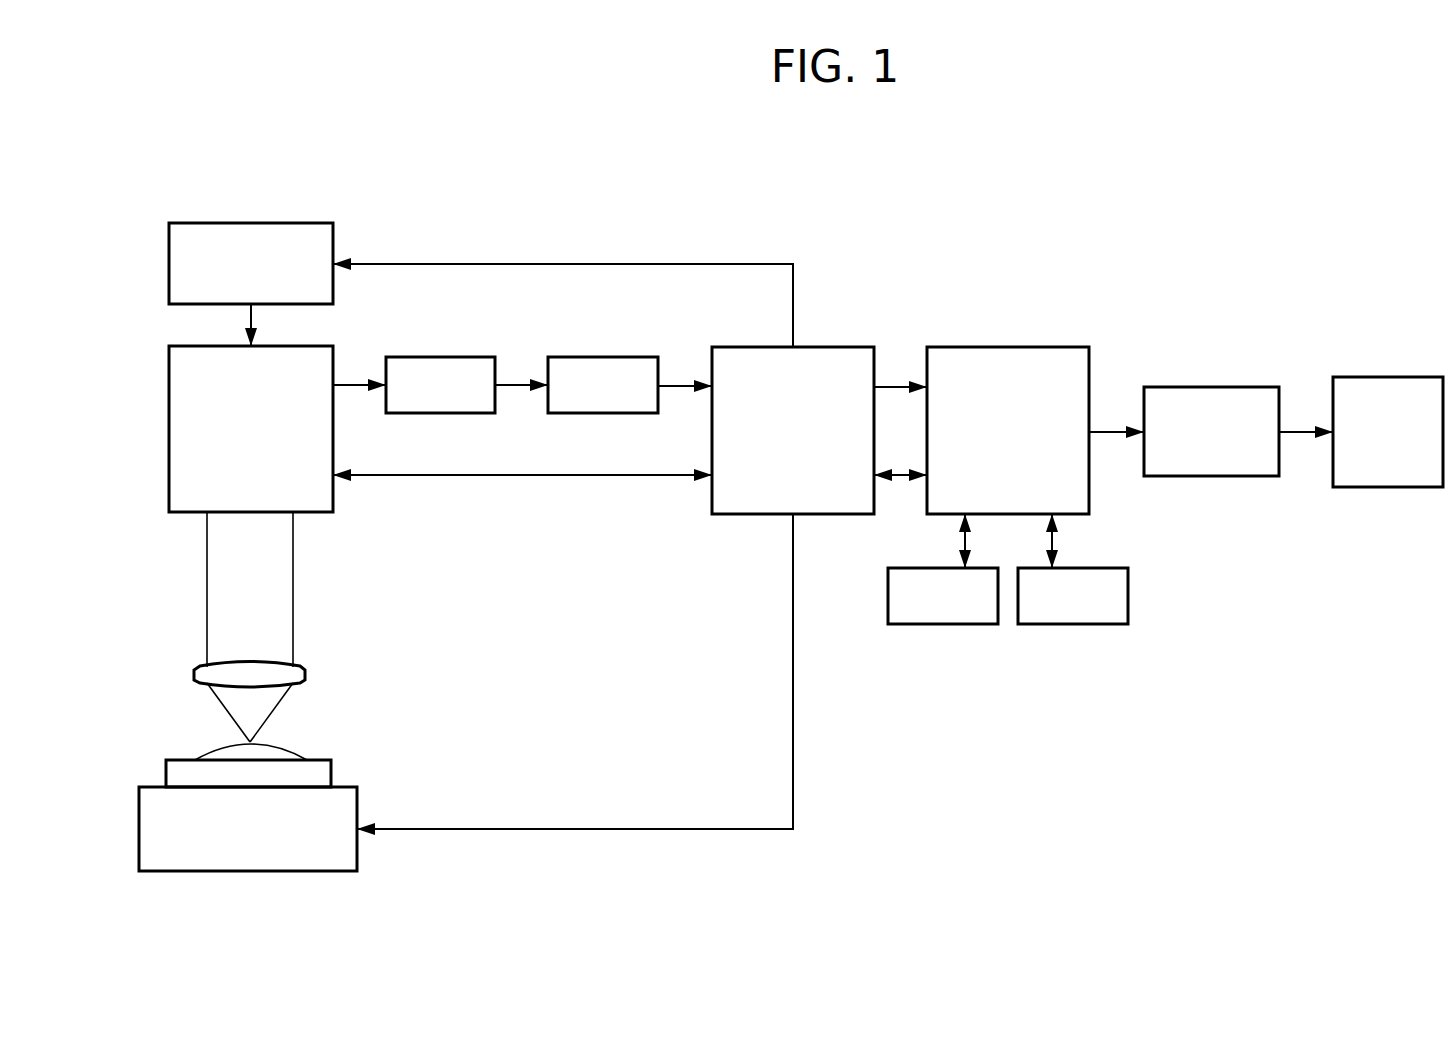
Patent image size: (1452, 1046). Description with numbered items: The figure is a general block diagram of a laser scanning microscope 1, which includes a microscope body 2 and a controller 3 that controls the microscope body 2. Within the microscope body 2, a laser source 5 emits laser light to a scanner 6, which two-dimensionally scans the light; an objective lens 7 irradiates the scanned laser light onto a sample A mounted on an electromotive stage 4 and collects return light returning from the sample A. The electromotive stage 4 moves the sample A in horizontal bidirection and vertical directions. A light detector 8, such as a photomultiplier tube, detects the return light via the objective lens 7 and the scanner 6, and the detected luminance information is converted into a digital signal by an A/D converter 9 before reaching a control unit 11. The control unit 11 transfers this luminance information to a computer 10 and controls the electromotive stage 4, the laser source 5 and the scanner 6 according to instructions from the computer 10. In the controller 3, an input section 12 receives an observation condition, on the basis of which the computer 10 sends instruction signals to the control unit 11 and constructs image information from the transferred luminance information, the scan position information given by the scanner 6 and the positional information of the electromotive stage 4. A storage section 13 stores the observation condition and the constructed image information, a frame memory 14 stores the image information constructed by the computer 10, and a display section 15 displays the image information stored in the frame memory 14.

The laser scanning microscope 1 is at (948, 177).
The microscope body 2 is at (552, 237).
The controller 3 is at (1072, 232).
The electromotive stage 4 is at (357, 797).
The laser source 5 is at (248, 223).
The scanner 6 is at (169, 429).
The objective lens 7 is at (305, 673).
The light detector 8 is at (442, 357).
The A/D converter 9 is at (609, 357).
The computer 10 is at (1024, 347).
The control unit 11 is at (840, 347).
The input section 12 is at (1068, 625).
The storage section 13 is at (941, 625).
The frame memory 14 is at (1213, 387).
The display section 15 is at (1384, 377).
The sample A is at (290, 748).